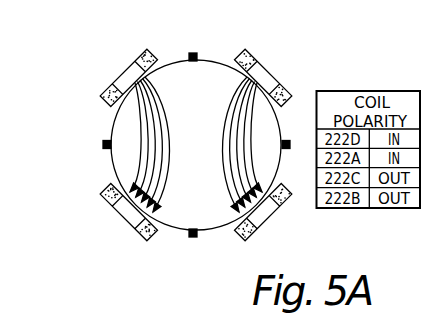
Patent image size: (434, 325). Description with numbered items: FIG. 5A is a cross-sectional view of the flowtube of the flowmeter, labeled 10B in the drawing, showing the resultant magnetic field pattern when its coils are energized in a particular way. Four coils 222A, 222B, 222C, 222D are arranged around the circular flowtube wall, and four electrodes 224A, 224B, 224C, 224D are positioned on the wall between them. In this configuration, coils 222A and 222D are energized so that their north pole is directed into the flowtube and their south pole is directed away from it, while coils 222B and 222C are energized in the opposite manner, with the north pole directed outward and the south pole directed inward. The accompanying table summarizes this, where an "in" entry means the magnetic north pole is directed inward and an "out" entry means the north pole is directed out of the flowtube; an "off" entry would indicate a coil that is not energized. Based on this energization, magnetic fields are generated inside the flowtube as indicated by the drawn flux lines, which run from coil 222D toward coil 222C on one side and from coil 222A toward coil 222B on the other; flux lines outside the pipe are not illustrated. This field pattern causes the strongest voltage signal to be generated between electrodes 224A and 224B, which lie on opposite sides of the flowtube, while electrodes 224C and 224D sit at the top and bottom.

The electromagnetic coil arrangement 10B is at (88, 115).
The coil 222A is at (282, 40).
The coil 222B is at (285, 201).
The coil 222C is at (107, 201).
The coil 222D is at (138, 57).
The electrode 224A is at (103, 144).
The electrode 224B is at (289, 141).
The electrode 224C is at (193, 53).
The electrode 224D is at (193, 237).